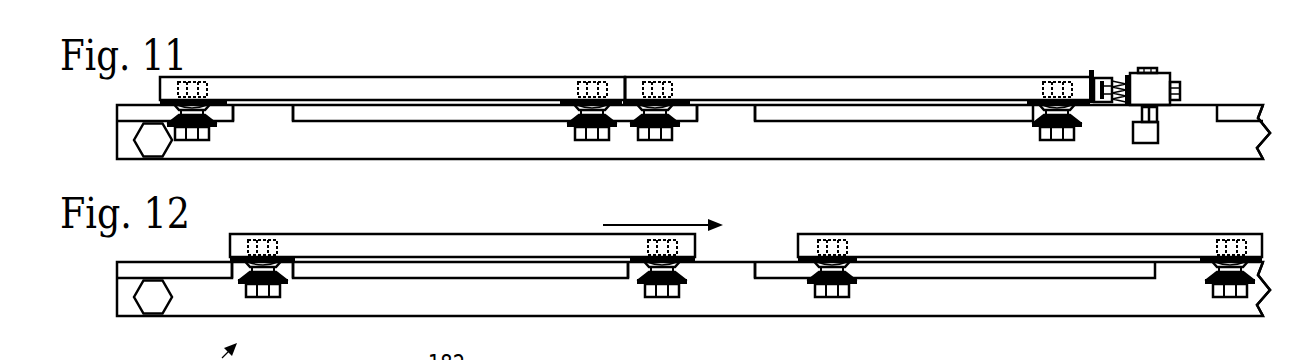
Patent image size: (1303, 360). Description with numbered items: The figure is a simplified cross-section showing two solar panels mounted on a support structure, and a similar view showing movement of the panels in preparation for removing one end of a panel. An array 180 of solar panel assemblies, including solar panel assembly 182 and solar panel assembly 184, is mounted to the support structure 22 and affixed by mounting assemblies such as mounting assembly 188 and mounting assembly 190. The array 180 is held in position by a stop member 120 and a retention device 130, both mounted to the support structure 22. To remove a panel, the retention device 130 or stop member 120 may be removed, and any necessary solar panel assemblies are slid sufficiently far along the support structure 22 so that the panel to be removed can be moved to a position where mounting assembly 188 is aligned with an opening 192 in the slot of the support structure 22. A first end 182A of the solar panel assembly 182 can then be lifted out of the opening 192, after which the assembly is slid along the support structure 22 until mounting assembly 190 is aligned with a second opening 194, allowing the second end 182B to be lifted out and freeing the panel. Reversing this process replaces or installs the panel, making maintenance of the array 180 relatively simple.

In FIG. 11, the support structure 22 is at (1264, 160).
In FIG. 12, the support structure 22 is at (1264, 317).
In FIG. 11, the stop member 120 is at (152, 147).
In FIG. 11, the retention device 130 is at (1166, 63).
In FIG. 11, the array of solar panel assemblies 180 is at (271, 62).
In FIG. 11, the solar panel assembly 182 is at (437, 77).
In FIG. 12, the solar panel assembly 182 is at (437, 234).
In FIG. 11, the first end of solar panel assembly 182A is at (158, 86).
In FIG. 12, the first end of solar panel assembly 182A is at (228, 240).
In FIG. 11, the second end of solar panel assembly 182B is at (628, 88).
In FIG. 12, the second end of solar panel assembly 182B is at (698, 240).
In FIG. 11, the solar panel assembly 184 is at (975, 77).
In FIG. 12, the solar panel assembly 184 is at (1082, 234).
In FIG. 11, the mounting assembly 188 is at (216, 124).
In FIG. 12, the mounting assembly 188 is at (288, 281).
In FIG. 11, the mounting assembly 190 is at (565, 126).
In FIG. 12, the mounting assembly 190 is at (638, 281).
In FIG. 11, the opening 192 is at (261, 118).
In FIG. 12, the opening 192 is at (285, 266).
In FIG. 11, the second opening 194 is at (718, 118).
In FIG. 12, the second opening 194 is at (716, 285).